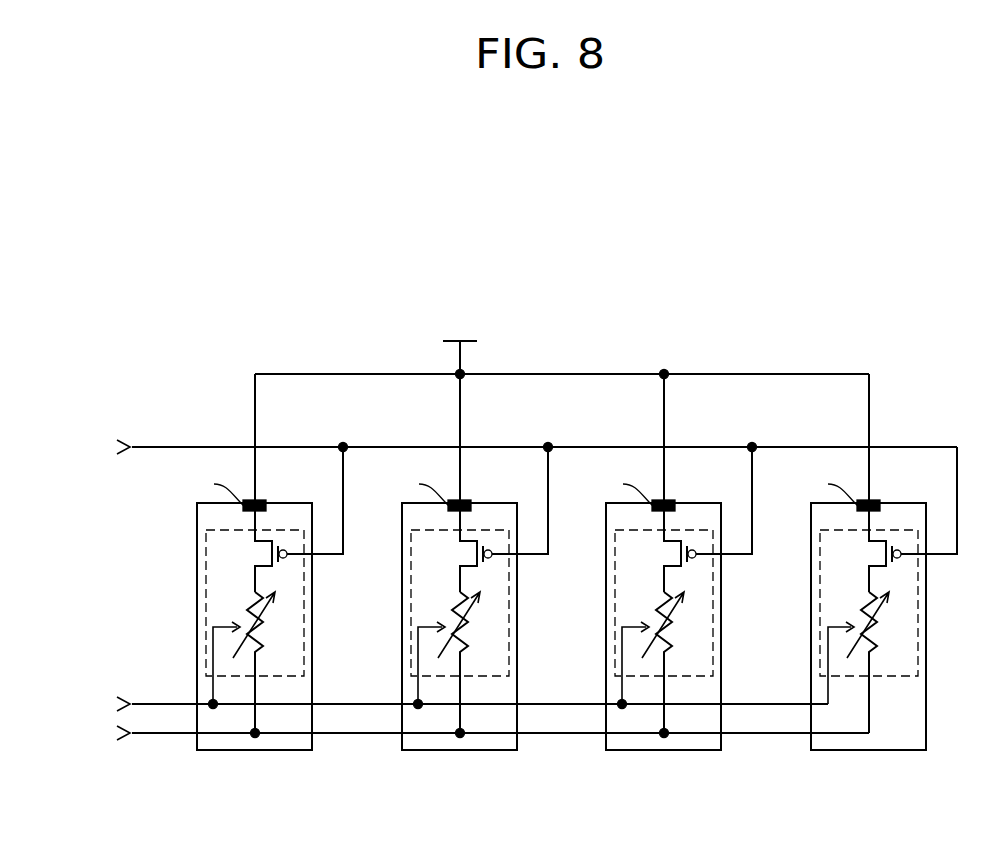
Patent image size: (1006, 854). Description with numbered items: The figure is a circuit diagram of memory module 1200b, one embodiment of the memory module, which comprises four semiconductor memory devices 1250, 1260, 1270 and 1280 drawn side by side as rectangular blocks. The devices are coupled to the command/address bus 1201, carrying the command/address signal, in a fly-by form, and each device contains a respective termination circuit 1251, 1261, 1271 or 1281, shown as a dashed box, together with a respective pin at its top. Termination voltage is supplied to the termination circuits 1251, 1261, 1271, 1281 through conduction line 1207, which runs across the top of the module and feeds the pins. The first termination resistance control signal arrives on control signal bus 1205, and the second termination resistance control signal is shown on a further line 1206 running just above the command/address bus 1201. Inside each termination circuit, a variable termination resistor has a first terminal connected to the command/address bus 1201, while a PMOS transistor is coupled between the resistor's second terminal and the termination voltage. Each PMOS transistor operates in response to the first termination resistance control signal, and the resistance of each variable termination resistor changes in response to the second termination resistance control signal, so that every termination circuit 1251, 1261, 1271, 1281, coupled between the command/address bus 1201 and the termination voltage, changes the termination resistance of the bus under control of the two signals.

The memory module 1200b is at (509, 504).
The command/address bus 1201 is at (155, 738).
The control signal bus 1205 is at (150, 447).
The second resistance termination control signal line (RTC2) 1206 is at (155, 698).
The conduction line 1207 is at (558, 374).
The semiconductor memory device 1250 is at (291, 503).
The termination circuit 1251 is at (206, 604).
The semiconductor memory device 1260 is at (496, 503).
The termination circuit 1261 is at (411, 604).
The semiconductor memory device 1270 is at (700, 503).
The termination circuit 1271 is at (615, 604).
The semiconductor memory device 1280 is at (905, 503).
The termination circuit 1281 is at (820, 604).